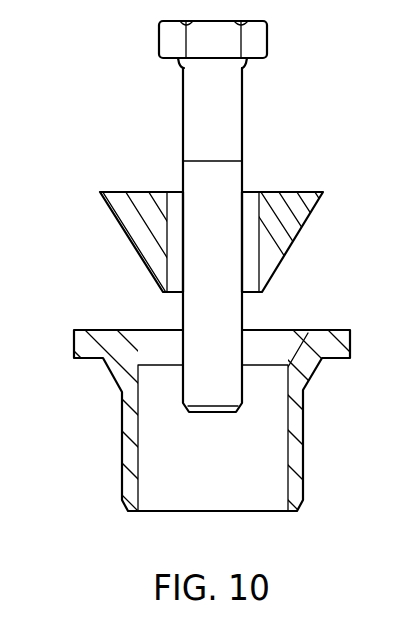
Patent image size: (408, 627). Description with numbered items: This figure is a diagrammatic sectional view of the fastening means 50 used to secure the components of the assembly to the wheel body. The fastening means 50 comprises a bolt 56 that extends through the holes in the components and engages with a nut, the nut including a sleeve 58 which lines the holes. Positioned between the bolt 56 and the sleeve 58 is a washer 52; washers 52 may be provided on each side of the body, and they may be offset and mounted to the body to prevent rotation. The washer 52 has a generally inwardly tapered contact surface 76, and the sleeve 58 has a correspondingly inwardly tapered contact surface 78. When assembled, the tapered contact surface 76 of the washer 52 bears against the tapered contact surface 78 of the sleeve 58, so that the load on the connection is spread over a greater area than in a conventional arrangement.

The fastening means 50 is at (95, 257).
The washer 52 is at (292, 192).
The bolt 56 is at (242, 123).
The sleeve 58 is at (303, 463).
The inwardly tapered contact surface 76 is at (298, 237).
The inwardly tapered contact surface 78 is at (290, 330).